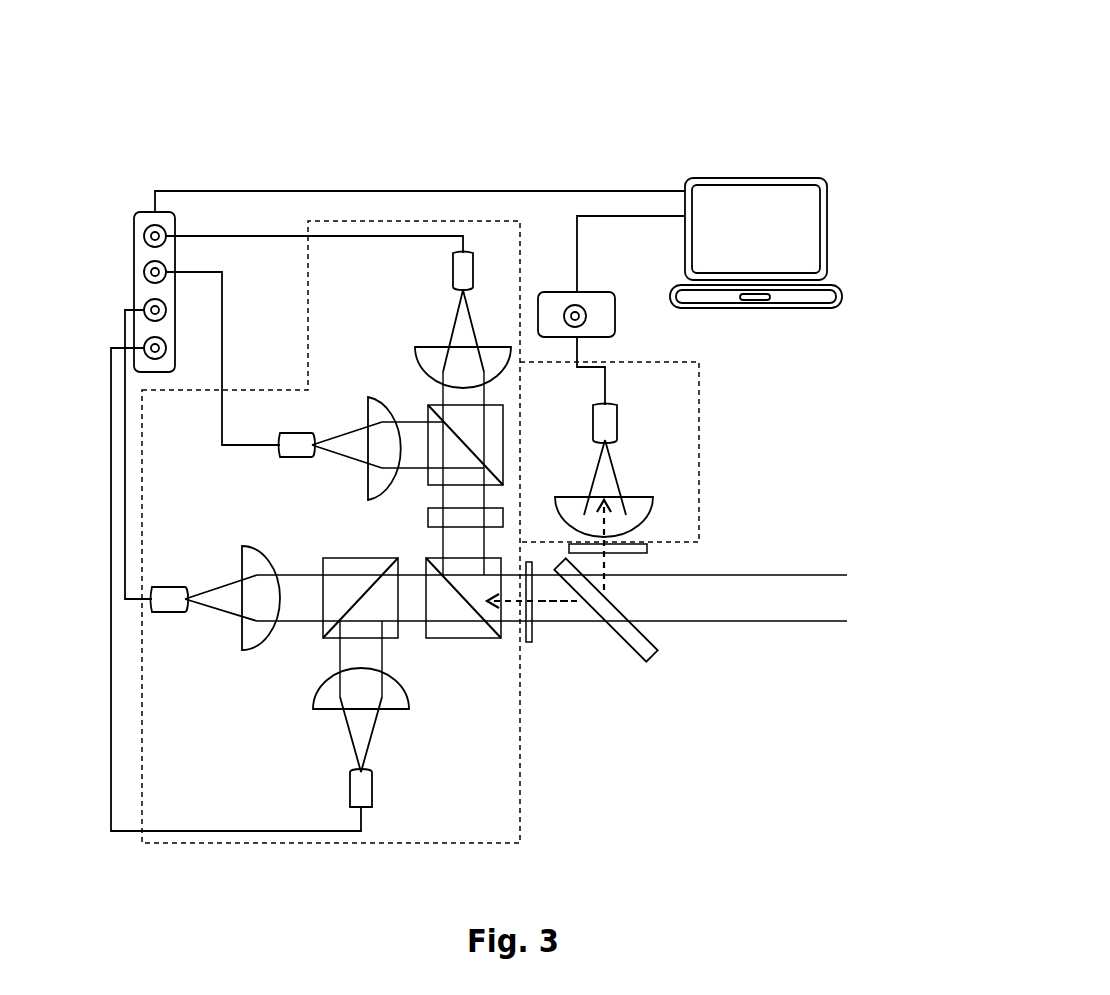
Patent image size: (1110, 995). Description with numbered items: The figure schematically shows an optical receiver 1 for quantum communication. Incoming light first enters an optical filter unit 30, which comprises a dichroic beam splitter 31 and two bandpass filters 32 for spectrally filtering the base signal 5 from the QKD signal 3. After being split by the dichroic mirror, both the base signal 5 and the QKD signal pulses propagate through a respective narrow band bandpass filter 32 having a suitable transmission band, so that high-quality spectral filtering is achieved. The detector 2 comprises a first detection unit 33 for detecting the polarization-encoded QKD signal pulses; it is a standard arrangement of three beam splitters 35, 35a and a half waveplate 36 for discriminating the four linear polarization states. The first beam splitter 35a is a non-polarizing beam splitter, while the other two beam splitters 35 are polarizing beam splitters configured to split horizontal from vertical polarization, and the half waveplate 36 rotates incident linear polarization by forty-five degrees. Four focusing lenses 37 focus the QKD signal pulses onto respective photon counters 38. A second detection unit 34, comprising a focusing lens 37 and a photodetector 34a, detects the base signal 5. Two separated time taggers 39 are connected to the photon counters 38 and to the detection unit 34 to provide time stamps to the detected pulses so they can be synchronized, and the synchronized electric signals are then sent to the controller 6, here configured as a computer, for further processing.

The optical receiver 1 is at (150, 88).
The detector 2 is at (428, 214).
The QKD signal 3 is at (513, 605).
The base signal 5 is at (606, 522).
The controller 6 is at (770, 178).
The optical filter unit 30 is at (668, 645).
The dichroic beam splitter 31 is at (645, 648).
The bandpass filter 32 is at (530, 645).
The first detection unit 33 is at (367, 218).
The second detection unit 34 is at (700, 455).
The photodetector 34a is at (617, 428).
The polarizing beam splitter 35 is at (440, 512).
The non-polarizing beam splitter 35a is at (460, 626).
The half waveplate 36 is at (410, 415).
The focusing lens 37 is at (252, 553).
The photon counter 38 is at (167, 598).
The time tagger 39 is at (140, 212).